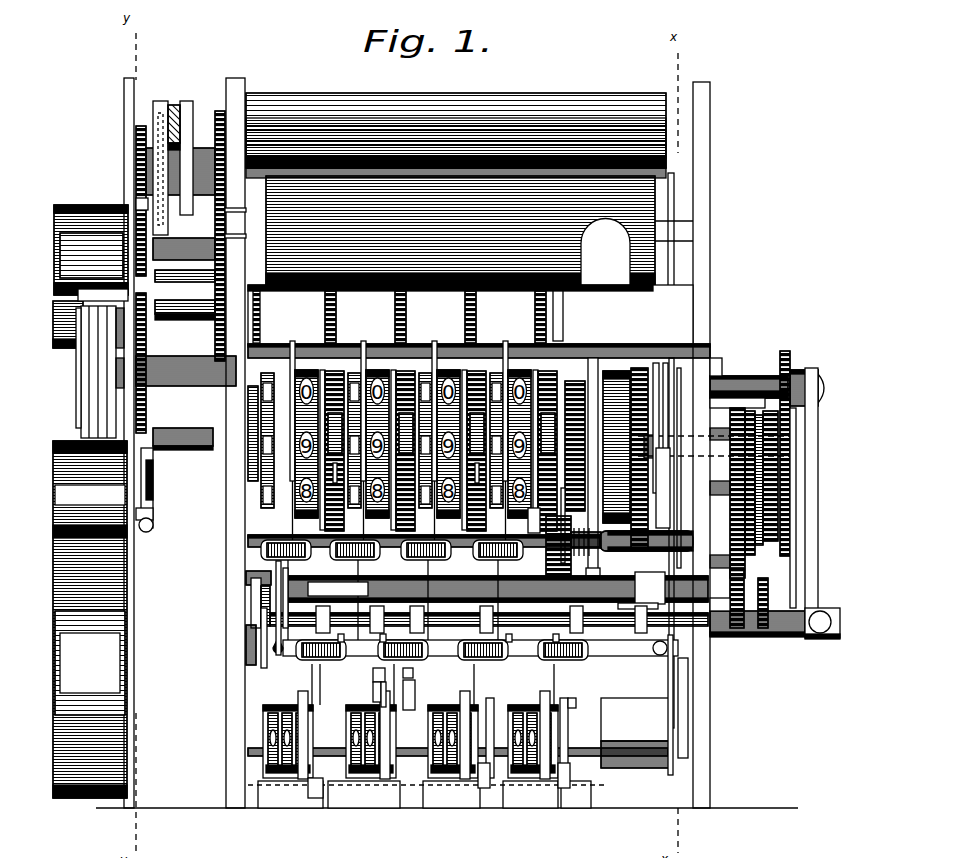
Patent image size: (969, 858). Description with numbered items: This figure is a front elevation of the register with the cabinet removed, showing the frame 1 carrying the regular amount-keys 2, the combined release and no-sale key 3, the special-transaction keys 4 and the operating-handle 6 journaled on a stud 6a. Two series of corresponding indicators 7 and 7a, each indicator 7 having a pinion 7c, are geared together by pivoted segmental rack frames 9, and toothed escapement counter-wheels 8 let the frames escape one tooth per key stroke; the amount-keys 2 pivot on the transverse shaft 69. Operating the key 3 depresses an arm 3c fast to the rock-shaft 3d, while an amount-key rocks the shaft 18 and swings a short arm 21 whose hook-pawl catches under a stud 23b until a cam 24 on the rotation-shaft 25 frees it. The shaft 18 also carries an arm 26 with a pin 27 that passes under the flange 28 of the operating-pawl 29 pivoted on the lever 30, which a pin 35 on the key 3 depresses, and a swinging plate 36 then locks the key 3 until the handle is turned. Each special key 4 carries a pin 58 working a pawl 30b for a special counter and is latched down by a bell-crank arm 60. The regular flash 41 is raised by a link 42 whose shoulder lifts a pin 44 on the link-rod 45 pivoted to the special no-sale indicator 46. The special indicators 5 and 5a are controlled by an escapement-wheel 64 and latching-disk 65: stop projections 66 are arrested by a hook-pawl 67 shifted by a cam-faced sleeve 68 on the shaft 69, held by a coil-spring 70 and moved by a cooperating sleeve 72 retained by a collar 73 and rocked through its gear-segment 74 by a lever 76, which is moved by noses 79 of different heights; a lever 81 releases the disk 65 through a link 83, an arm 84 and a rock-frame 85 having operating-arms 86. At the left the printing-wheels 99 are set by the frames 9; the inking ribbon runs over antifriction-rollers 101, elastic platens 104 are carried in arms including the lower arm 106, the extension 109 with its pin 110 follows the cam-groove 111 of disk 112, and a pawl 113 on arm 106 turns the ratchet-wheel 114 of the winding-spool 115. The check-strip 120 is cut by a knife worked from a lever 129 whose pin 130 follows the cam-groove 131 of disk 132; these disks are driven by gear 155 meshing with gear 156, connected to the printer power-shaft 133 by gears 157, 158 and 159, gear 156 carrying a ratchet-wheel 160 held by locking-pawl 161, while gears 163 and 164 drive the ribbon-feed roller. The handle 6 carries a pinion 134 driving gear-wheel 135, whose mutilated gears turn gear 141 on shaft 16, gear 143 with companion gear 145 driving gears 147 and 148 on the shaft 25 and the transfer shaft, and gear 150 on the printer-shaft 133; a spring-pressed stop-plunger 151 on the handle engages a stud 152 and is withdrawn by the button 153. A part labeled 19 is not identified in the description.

The frame 1 is at (703, 200).
The regular amount-keys 2 is at (205, 543).
The special release-key 3 is at (489, 631).
The arm 3c is at (680, 708).
The rock-shaft 3d is at (660, 650).
The special-transaction keys 4 is at (413, 671).
The special indicator 5 is at (560, 300).
The special indicator 5a is at (625, 400).
The operating-handle 6 is at (813, 490).
The stud 6a is at (772, 345).
The indicators 7 is at (280, 505).
The indicators 7a is at (410, 317).
The pinion 7c is at (413, 477).
The toothed escapement counter-wheels 8 is at (282, 468).
The segmental rack frames 9 is at (540, 300).
The shaft 16 is at (238, 565).
The transverse shaft 18 is at (556, 636).
The collar 19 is at (385, 636).
The short arm 21 is at (253, 641).
The stud 23b is at (238, 628).
The cam 24 is at (253, 596).
The rotation-shaft 25 is at (243, 578).
The arm 26 is at (343, 636).
The pin 27 is at (365, 680).
The flange 28 is at (365, 666).
The operating-pawl 29 is at (375, 690).
The lever 30 is at (290, 688).
The pawl 30b is at (568, 690).
The pin 35 is at (423, 695).
The swinging plate 36 is at (405, 664).
The flash 41 is at (456, 135).
The link 42 is at (665, 262).
The pin 44 is at (523, 401).
The link-rod 45 is at (665, 304).
The special no-sale indicator 46 is at (460, 231).
The pin 58 is at (545, 690).
The latching bell-crank arms 60 is at (480, 644).
The escapement-wheel 64 is at (571, 440).
The latching-disk 65 is at (585, 350).
The stop projections 66 is at (659, 488).
The hook-pawl 67 is at (554, 495).
The cam-faced sleeve 68 is at (547, 545).
The transverse shaft 69 is at (393, 598).
The coil-spring 70 is at (585, 548).
The cam-faced sleeve 72 is at (530, 560).
The collar 73 is at (524, 521).
The gear-segment 74 is at (610, 595).
The pivoted lever 76 is at (511, 636).
The noses 79 is at (305, 782).
The lever 81 is at (600, 543).
The link 83 is at (636, 718).
The arm 84 is at (593, 740).
The rock-frame 85 is at (405, 785).
The operating-arms 86 is at (305, 765).
The printing-wheels 99 is at (80, 367).
The antifriction-rollers 101 is at (150, 312).
The elastic platens 104 is at (112, 432).
The arm 106 is at (145, 455).
The operating extension 109 is at (128, 190).
The pin 110 is at (150, 156).
The cam-groove 111 is at (145, 104).
The disk 112 is at (160, 95).
The spring-pressed pawl 113 is at (168, 480).
The ratchet-wheel 114 is at (145, 505).
The tape-winding spool 115 is at (146, 516).
The check-strip 120 is at (110, 656).
The pivoted lever 129 is at (168, 96).
The pin 130 is at (128, 122).
The cam-groove 131 is at (150, 139).
The disk 132 is at (180, 97).
The printer power-shaft 133 is at (760, 368).
The pinion 134 is at (768, 345).
The gear-wheel 135 is at (740, 425).
The gear-wheel 141 is at (760, 590).
The gear 143 is at (770, 448).
The gear 145 is at (705, 365).
The gear 147 is at (712, 633).
The gear 148 is at (760, 480).
The gear-wheel 150 is at (750, 440).
The stop-plunger 151 is at (800, 628).
The stud 152 is at (715, 628).
The operating-button 153 is at (815, 628).
The gear 155 is at (215, 125).
The gear 156 is at (184, 258).
The gear 157 is at (185, 284).
The gear 158 is at (186, 365).
The gear 159 is at (210, 420).
The ratchet-wheel 160 is at (218, 203).
The locking-pawl 161 is at (218, 235).
The gear 163 is at (100, 196).
The gear 164 is at (78, 343).